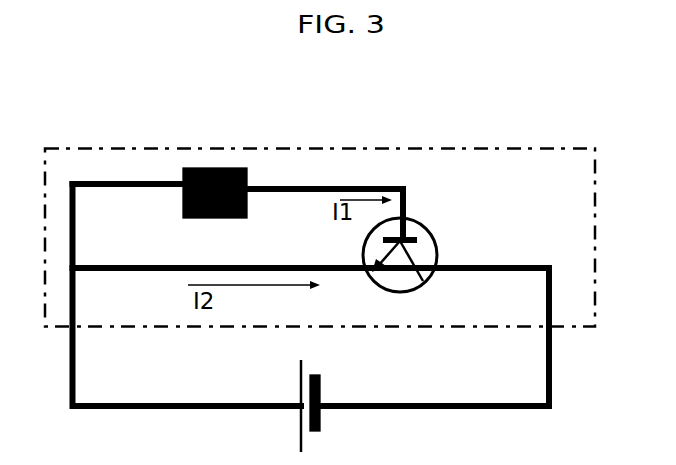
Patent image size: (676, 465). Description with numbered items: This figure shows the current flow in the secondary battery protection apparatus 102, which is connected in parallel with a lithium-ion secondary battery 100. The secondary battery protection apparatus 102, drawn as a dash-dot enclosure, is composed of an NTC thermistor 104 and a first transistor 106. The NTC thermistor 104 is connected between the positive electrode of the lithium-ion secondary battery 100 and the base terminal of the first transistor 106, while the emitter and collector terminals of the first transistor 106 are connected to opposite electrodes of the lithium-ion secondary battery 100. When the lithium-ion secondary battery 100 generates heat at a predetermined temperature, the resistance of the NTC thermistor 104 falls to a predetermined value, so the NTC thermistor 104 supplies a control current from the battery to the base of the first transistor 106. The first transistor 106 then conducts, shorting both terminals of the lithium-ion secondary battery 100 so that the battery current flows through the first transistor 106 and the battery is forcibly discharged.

The lithium-ion secondary battery 100 is at (375, 398).
The secondary battery protection apparatus 102 is at (320, 209).
The NTC thermistor 104 is at (232, 154).
The first transistor 106 is at (438, 243).